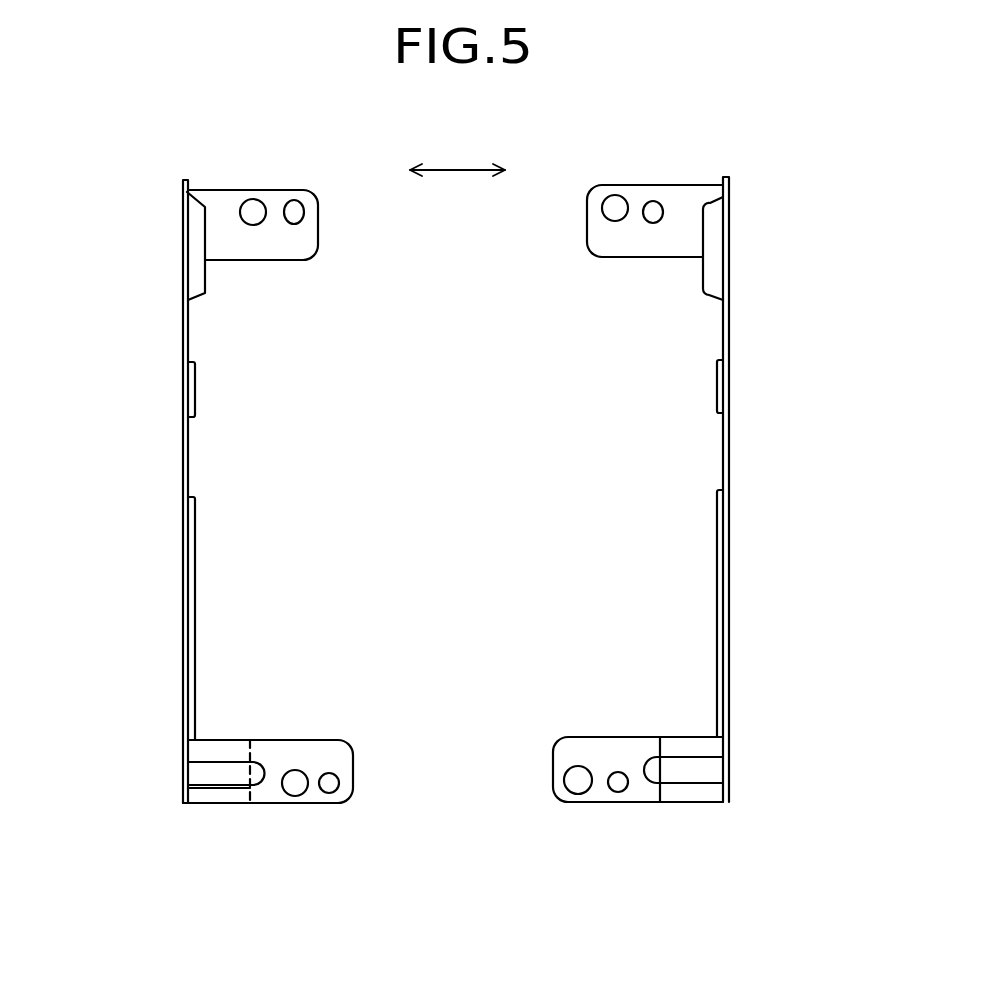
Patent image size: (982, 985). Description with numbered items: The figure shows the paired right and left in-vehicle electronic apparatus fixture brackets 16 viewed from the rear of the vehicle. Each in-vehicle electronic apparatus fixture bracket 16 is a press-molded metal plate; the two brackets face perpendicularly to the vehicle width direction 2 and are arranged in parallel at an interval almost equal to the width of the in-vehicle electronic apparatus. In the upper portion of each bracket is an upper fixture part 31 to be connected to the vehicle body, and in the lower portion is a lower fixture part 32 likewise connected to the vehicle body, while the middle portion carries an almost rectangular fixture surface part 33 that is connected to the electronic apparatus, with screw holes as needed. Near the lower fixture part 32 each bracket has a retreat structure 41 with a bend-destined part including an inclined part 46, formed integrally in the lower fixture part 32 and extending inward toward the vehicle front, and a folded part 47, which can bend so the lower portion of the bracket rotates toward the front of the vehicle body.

The vehicle width direction 2 is at (457, 166).
The in-vehicle electronic apparatus fixture bracket 16 is at (172, 422).
The upper fixture part 31 is at (320, 212).
The lower fixture part 32 is at (553, 773).
The fixture surface part 33 is at (186, 550).
The retreat structure 41 is at (340, 860).
The inclined part 46 is at (222, 805).
The folded part 47 is at (254, 805).